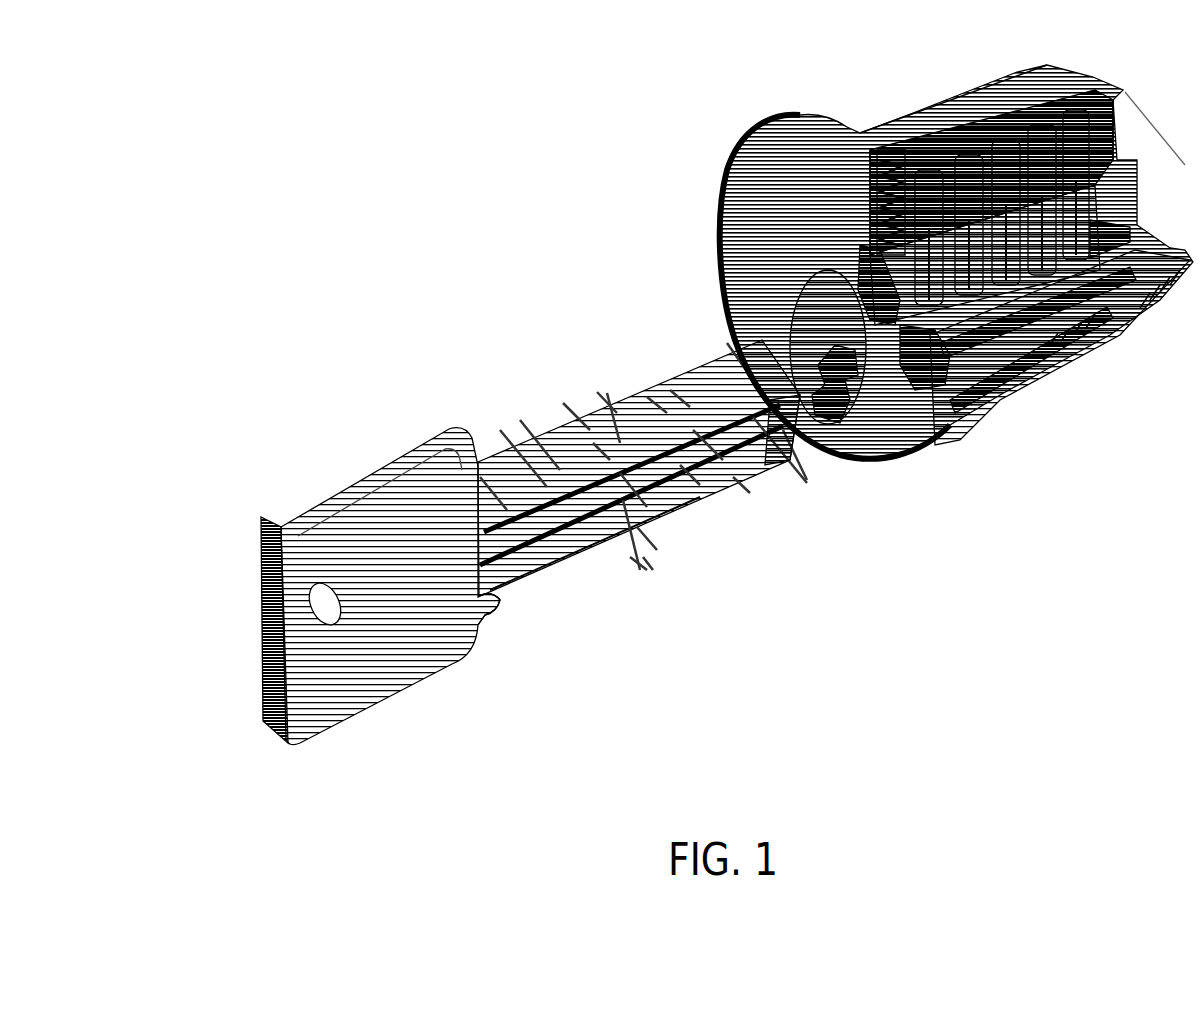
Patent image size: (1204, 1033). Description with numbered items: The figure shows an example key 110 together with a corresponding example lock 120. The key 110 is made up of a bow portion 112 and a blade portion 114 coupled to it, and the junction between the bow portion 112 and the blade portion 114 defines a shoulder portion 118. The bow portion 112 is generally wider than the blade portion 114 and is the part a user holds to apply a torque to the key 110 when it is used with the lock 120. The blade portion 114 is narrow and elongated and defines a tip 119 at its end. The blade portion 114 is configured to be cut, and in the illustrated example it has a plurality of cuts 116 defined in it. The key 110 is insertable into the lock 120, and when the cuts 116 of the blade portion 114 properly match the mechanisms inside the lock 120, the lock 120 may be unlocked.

The key 110 is at (332, 433).
The bow portion 112 is at (401, 724).
The blade portion 114 is at (713, 596).
The cuts 116 is at (690, 380).
The shoulder portion 118 is at (503, 626).
The tip 119 is at (802, 437).
The lock 120 is at (807, 80).